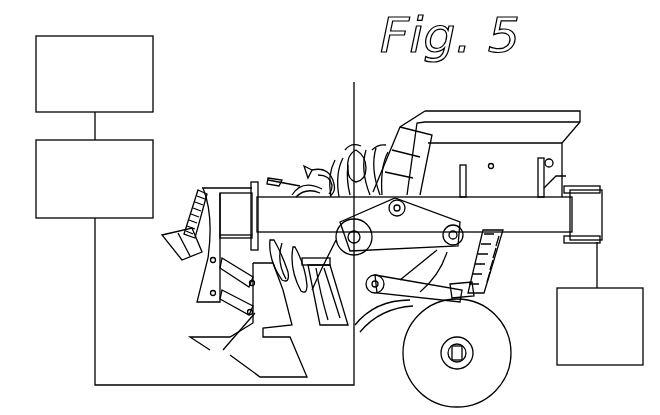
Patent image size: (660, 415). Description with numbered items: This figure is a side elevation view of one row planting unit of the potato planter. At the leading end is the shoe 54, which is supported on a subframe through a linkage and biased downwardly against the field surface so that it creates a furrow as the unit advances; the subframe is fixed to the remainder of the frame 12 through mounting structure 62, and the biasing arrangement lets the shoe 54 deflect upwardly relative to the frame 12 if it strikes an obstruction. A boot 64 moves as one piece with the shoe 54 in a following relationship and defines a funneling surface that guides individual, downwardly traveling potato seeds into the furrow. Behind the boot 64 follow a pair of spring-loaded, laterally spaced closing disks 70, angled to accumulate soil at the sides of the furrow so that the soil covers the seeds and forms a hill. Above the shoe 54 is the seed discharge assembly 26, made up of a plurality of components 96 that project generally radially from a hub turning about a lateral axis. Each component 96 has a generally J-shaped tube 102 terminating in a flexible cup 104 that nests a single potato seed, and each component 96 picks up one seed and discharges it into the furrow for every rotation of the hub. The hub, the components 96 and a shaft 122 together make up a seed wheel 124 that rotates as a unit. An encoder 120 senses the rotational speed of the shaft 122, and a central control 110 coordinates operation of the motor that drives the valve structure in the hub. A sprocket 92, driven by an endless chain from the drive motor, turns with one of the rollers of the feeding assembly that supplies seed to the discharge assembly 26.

The control 110 is at (110, 102).
The encoder 120 is at (112, 210).
The frame 12 is at (610, 351).
The mounting structure 62 is at (448, 184).
The component 96 is at (380, 143).
The cup 104 is at (368, 136).
The tube/conduit 102 is at (320, 176).
The shaft 122 is at (342, 125).
The seed wheel 124 is at (525, 414).
The sprocket 92 is at (407, 306).
The closing disk 70 is at (477, 336).
The seed discharge assembly 26 is at (222, 283).
The shoe 54 is at (220, 347).
The boot 64 is at (307, 365).